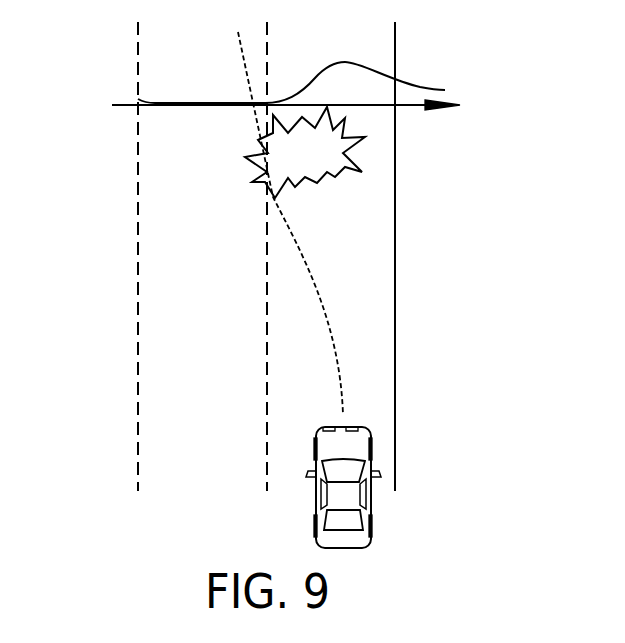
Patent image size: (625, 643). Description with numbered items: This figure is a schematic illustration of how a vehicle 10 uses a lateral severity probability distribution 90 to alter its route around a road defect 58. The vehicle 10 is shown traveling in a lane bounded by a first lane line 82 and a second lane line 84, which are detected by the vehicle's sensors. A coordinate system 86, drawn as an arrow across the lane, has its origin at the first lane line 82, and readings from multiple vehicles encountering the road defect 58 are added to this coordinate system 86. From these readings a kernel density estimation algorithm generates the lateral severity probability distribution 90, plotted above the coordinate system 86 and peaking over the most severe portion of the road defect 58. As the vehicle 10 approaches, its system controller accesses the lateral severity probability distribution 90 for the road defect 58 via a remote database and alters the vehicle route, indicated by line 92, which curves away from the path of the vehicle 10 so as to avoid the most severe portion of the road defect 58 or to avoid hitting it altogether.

The vehicle 10 is at (343, 491).
The road defect 58 is at (318, 166).
The first lane line 82 is at (265, 353).
The second lane line 84 is at (395, 278).
The coordinate system 86 is at (122, 105).
The lateral severity probability distribution 90 is at (330, 68).
The line 92 is at (299, 244).